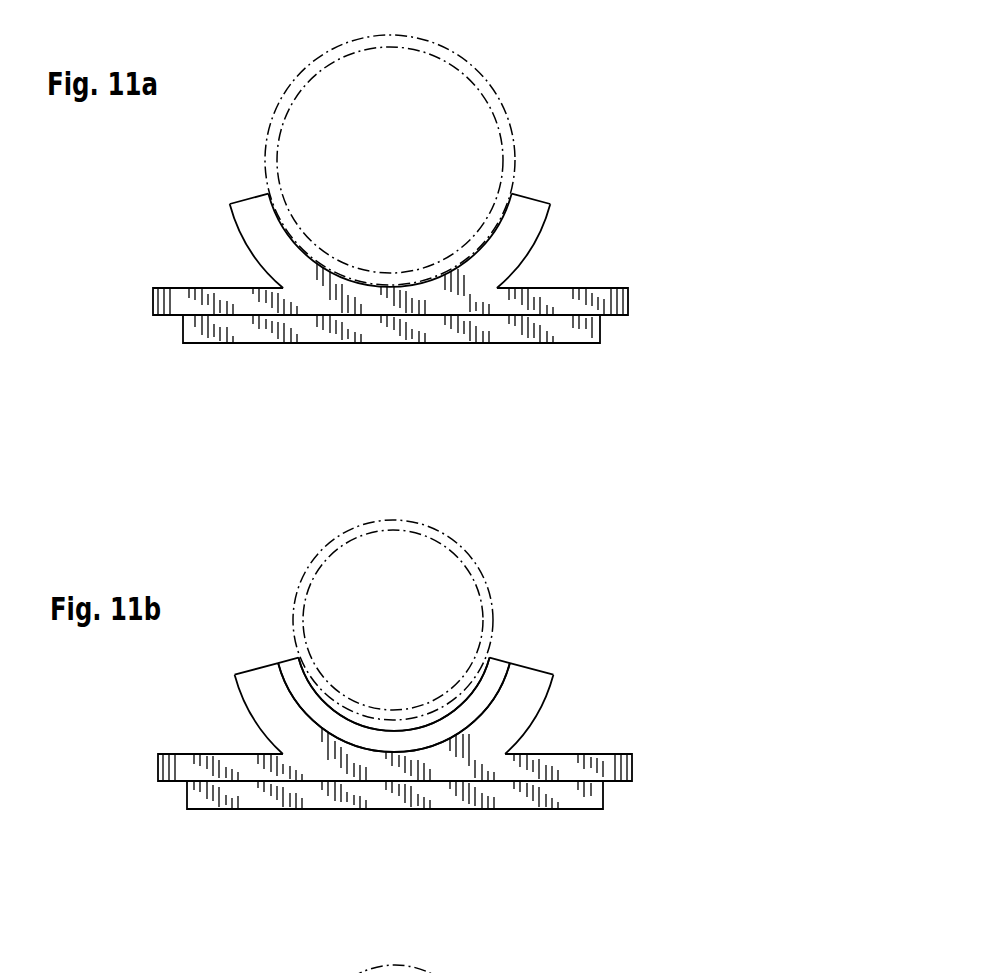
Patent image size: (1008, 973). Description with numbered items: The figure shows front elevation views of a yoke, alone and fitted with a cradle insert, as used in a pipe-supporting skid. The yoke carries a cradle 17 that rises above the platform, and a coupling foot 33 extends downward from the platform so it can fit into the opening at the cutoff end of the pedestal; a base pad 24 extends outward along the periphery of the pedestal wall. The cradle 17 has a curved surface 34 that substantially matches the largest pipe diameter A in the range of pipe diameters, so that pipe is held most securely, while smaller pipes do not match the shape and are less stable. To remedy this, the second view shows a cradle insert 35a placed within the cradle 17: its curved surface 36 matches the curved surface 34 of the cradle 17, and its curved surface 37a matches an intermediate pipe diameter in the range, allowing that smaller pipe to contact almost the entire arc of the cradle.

In FIG. 11A, the largest pipe diameter A is at (488, 80).
In FIG. 11A, the cradle 17 is at (533, 215).
In FIG. 11B, the cradle 17 is at (540, 693).
In FIG. 11A, the base pad 24 is at (613, 300).
In FIG. 11B, the base pad 24 is at (615, 762).
In FIG. 11A, the coupling foot 33 is at (260, 333).
In FIG. 11B, the coupling foot 33 is at (258, 805).
In FIG. 11A, the curved surface 34 is at (337, 272).
In FIG. 11B, the curved surface 34 is at (358, 752).
In FIG. 11B, the cradle insert 35a is at (495, 660).
In FIG. 11B, the curved surface 36 is at (440, 747).
In FIG. 11B, the curved surface 37a is at (337, 708).